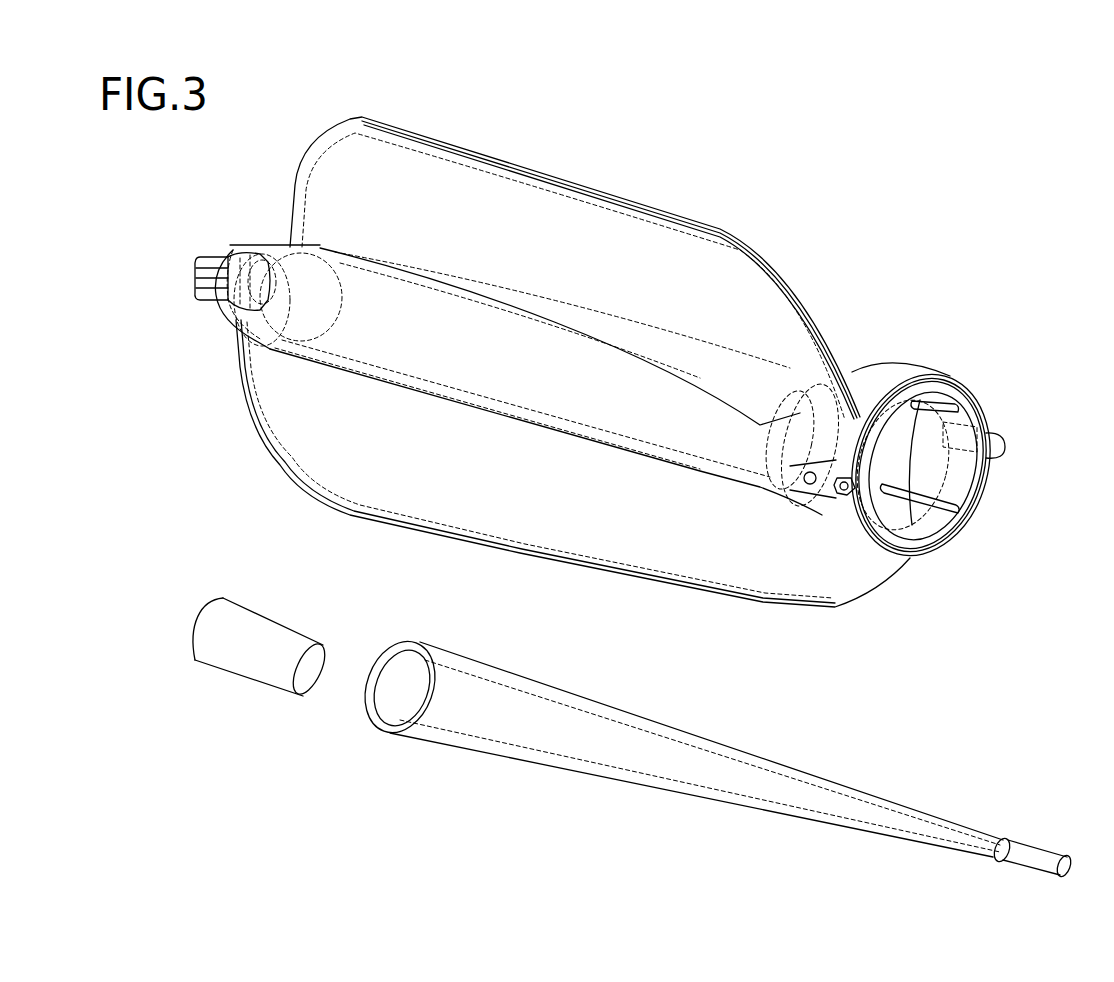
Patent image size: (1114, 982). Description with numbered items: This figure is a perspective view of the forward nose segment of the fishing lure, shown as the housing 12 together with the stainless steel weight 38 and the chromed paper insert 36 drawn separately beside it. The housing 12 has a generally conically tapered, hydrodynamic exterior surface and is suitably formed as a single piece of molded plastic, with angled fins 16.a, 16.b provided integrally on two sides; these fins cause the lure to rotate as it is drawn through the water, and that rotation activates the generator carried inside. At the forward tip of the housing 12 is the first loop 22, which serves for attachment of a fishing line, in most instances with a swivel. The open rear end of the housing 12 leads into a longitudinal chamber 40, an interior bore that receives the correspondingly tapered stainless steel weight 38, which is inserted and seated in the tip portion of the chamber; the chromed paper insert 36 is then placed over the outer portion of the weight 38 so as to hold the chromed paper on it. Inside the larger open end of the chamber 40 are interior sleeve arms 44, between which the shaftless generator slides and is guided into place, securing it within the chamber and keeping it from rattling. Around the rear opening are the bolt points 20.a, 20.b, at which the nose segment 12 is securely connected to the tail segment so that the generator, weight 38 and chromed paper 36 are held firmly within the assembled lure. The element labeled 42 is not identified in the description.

The housing 12 is at (773, 222).
The angled fin 16.a is at (593, 190).
The angled fin 16.b is at (483, 545).
The bolt attachment point 20.a is at (997, 437).
The bolt attachment point 20.b is at (822, 515).
The first loop 22 is at (197, 277).
The chromed paper insert 36 is at (808, 749).
The stainless steel weight 38 is at (232, 696).
The longitudinal chamber 40 is at (370, 363).
The tube bore 42 is at (540, 753).
The interior sleeve arms 44 is at (986, 498).